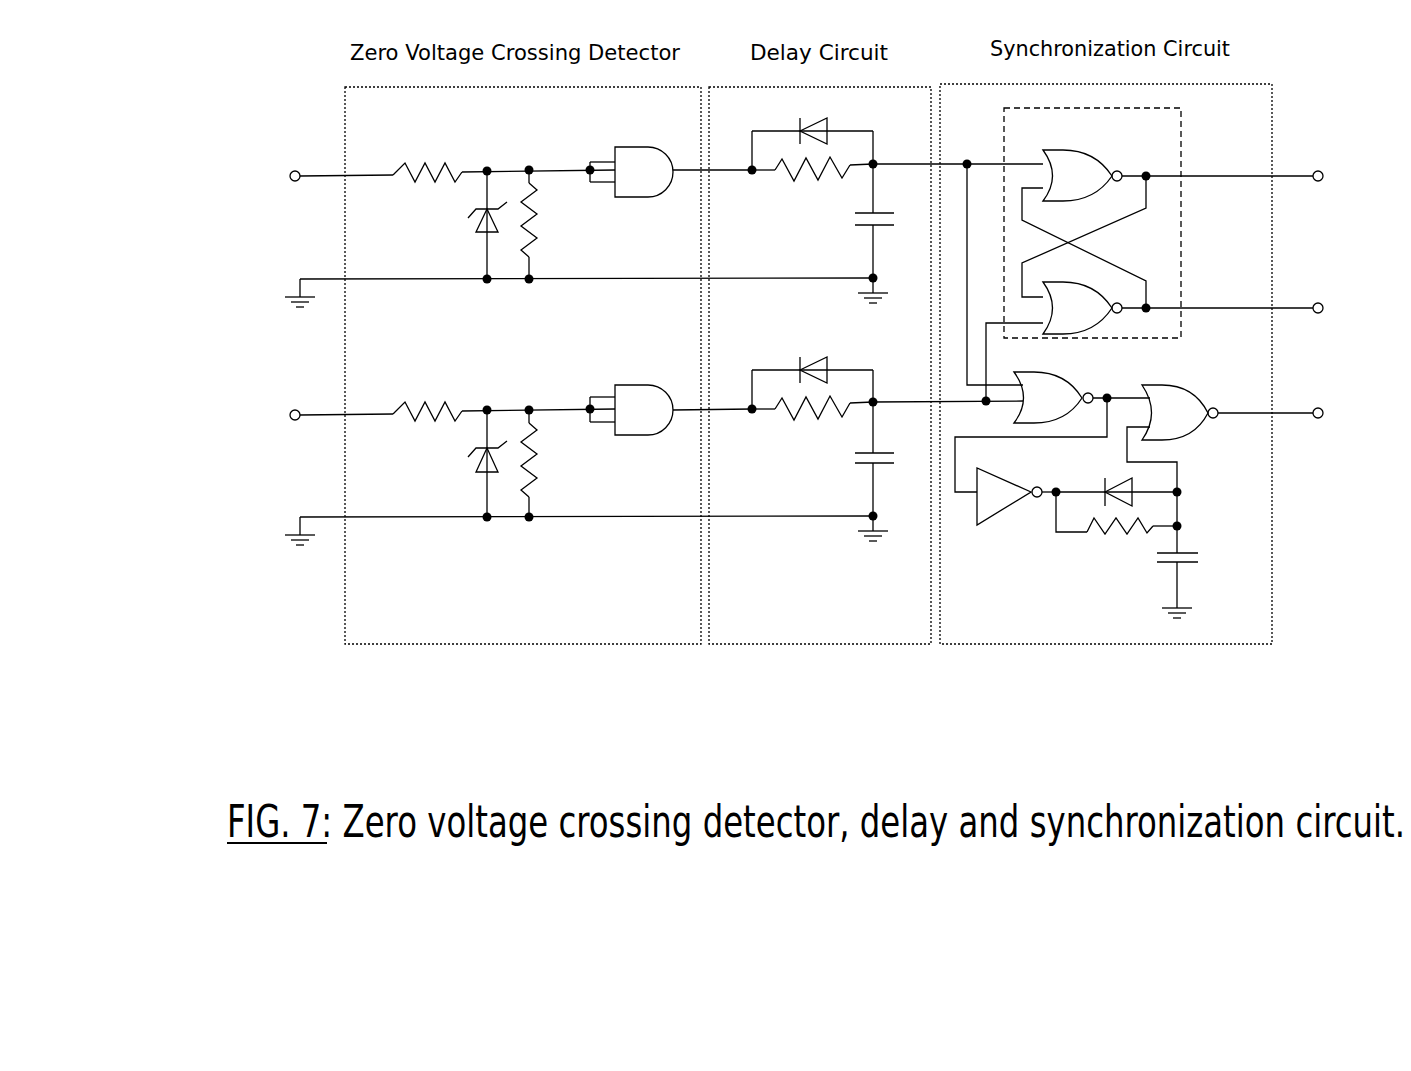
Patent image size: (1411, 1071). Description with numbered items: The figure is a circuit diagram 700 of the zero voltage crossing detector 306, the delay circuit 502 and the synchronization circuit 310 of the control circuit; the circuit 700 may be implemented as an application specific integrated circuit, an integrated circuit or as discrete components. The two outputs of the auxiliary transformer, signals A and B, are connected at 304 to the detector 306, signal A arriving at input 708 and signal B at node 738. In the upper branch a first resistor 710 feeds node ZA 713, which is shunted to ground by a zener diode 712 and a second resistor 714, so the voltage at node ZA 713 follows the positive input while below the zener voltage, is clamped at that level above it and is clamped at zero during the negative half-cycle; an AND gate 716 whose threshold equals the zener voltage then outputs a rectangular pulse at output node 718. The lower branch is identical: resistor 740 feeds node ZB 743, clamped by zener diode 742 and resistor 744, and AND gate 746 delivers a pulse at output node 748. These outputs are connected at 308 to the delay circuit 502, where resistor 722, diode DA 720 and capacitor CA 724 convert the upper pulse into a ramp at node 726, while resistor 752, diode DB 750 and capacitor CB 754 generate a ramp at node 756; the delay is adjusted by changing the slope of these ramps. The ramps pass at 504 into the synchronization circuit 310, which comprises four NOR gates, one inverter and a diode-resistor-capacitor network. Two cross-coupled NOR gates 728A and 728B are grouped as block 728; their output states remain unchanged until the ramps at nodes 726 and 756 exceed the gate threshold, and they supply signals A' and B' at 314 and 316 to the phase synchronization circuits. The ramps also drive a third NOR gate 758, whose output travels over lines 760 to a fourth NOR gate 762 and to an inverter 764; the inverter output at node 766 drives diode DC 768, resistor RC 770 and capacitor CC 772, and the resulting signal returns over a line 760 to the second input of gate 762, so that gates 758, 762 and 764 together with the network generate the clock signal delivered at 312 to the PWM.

The circuit diagram 700 is at (205, 118).
The connection of auxiliary transformer outputs 304 is at (330, 672).
The zero crossing detector circuit 306 is at (519, 645).
The connection of zero crossing detector outputs 308 is at (704, 672).
The delay circuit 502 is at (858, 645).
The connection of delay circuit output 504 is at (936, 672).
The synchronization circuit 310 is at (1147, 645).
The input voltage signal A 708 is at (327, 176).
The resistor RA1 710 is at (410, 183).
The zener diode ZA1 712 is at (480, 228).
The node ZA 713 is at (569, 168).
The resistor RA2 714 is at (548, 250).
The AND logic gate GA1 716 is at (628, 197).
The output A1 718 is at (727, 172).
The diode DA 720 is at (822, 117).
The resistor RA3 722 is at (790, 180).
The capacitor CA 724 is at (857, 226).
The node A2 726 is at (958, 163).
The RS flip-flop 728 is at (1128, 223).
The NOR logic gate GA2 728A is at (1088, 150).
The NOR logic gate GB2 728B is at (1125, 270).
The connection of signal A' output 314 is at (1280, 177).
The connection of signal B' output 316 is at (1280, 308).
The connection of clock output 312 is at (1285, 413).
The input voltage signal B 738 is at (327, 415).
The resistor RB1 740 is at (410, 422).
The zener diode ZB1 742 is at (480, 466).
The node ZB line 743 is at (566, 407).
The resistor RB2 744 is at (548, 488).
The AND logic gate GB1 746 is at (628, 435).
The node B1 748 is at (727, 411).
The diode DB 750 is at (829, 357).
The resistor RB3 752 is at (790, 419).
The capacitor CB 754 is at (857, 465).
The node B2 756 is at (873, 370).
The NOR logic gate GC1 758 is at (1078, 384).
The feedback line C1 760 is at (1012, 437).
The NOR logic gate GC2 762 is at (1203, 392).
The inverter GC3 764 is at (993, 516).
The node C2 766 is at (1067, 532).
The diode DC 768 is at (1134, 498).
The resistor RC 770 is at (1149, 536).
The capacitor CC 772 is at (1192, 556).